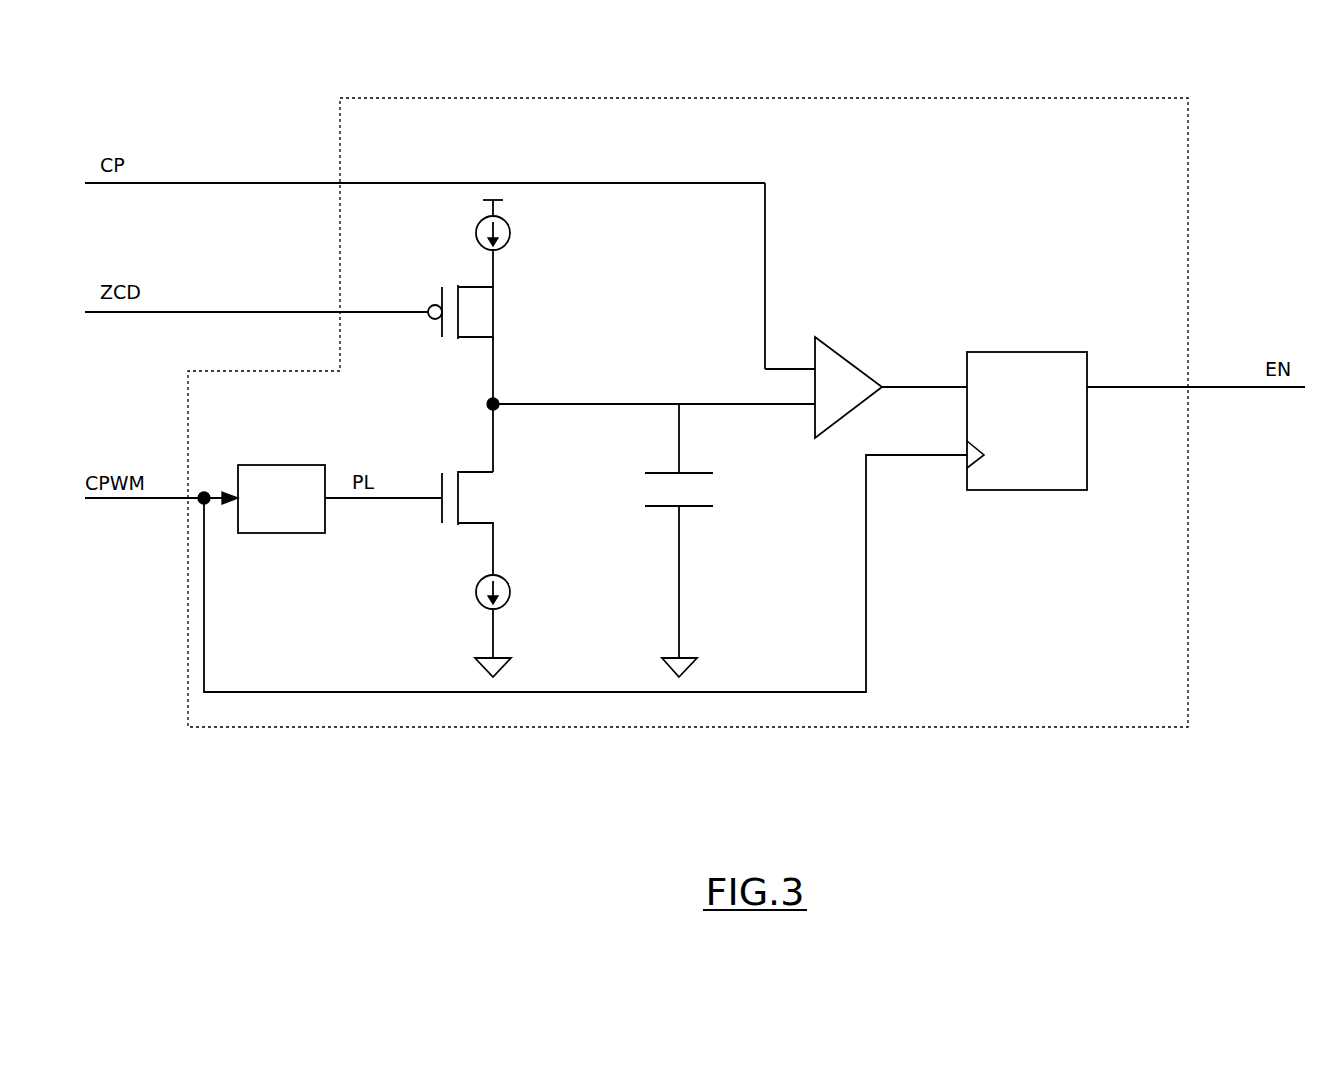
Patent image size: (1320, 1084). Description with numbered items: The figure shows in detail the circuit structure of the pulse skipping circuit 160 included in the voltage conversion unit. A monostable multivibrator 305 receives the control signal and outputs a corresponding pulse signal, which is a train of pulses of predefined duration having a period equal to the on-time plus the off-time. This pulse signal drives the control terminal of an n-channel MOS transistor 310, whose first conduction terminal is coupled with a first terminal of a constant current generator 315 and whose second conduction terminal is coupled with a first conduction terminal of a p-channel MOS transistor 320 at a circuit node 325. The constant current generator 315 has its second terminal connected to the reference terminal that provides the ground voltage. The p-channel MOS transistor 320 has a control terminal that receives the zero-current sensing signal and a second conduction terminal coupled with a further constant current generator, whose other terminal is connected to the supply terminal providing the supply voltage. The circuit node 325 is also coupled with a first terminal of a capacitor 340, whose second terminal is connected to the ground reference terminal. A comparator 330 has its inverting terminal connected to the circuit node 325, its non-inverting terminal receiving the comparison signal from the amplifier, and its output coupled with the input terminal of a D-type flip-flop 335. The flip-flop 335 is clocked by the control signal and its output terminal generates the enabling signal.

The pulse skipping circuit 160 is at (1005, 728).
The monostable multivibrator 305 is at (300, 478).
The n-channel MOS transistor 310 is at (473, 500).
The constant current generator 315 is at (513, 596).
The p-channel MOS transistor 320 is at (511, 233).
The circuit node 325 is at (500, 400).
The comparator 330 is at (855, 374).
The D-type flip-flop 335 is at (1067, 360).
The capacitor 340 is at (694, 524).